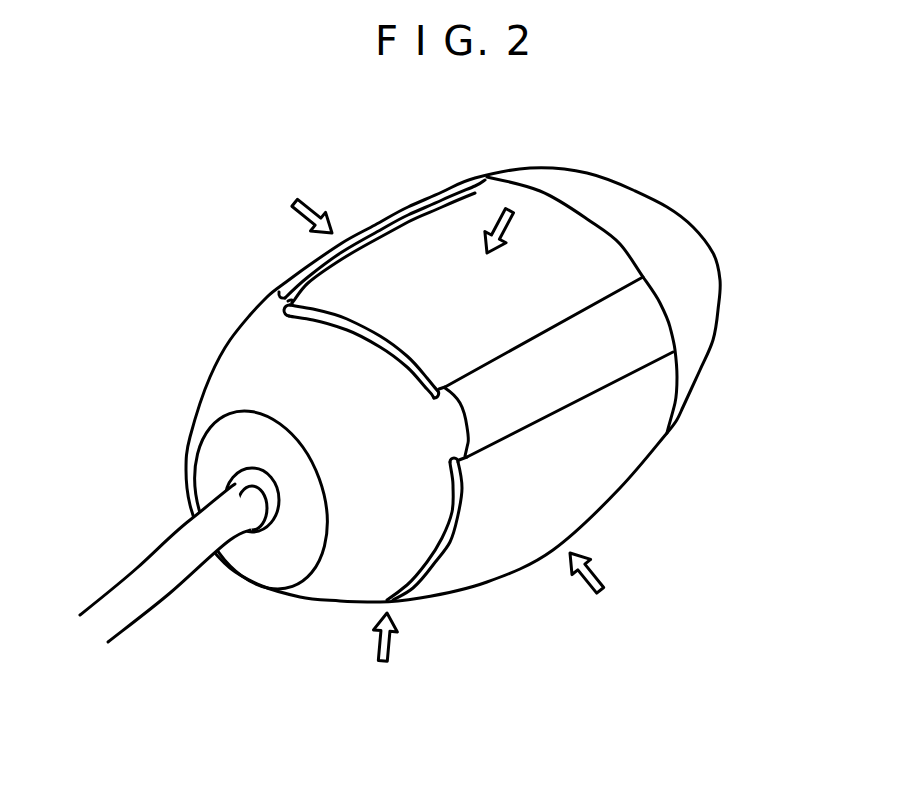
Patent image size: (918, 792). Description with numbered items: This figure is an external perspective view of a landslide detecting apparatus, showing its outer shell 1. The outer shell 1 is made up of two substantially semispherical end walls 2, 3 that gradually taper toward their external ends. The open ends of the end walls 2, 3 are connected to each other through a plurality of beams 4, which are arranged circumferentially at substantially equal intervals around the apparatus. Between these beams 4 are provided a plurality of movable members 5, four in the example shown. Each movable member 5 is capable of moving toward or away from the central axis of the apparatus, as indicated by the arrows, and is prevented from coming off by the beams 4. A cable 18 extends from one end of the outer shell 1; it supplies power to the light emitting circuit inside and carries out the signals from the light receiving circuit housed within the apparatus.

The outer shell 1 is at (563, 170).
The end wall 2 is at (260, 347).
The end wall 3 is at (660, 220).
The beam 4 is at (303, 268).
The movable member 5 is at (397, 247).
The cable 18 is at (160, 560).